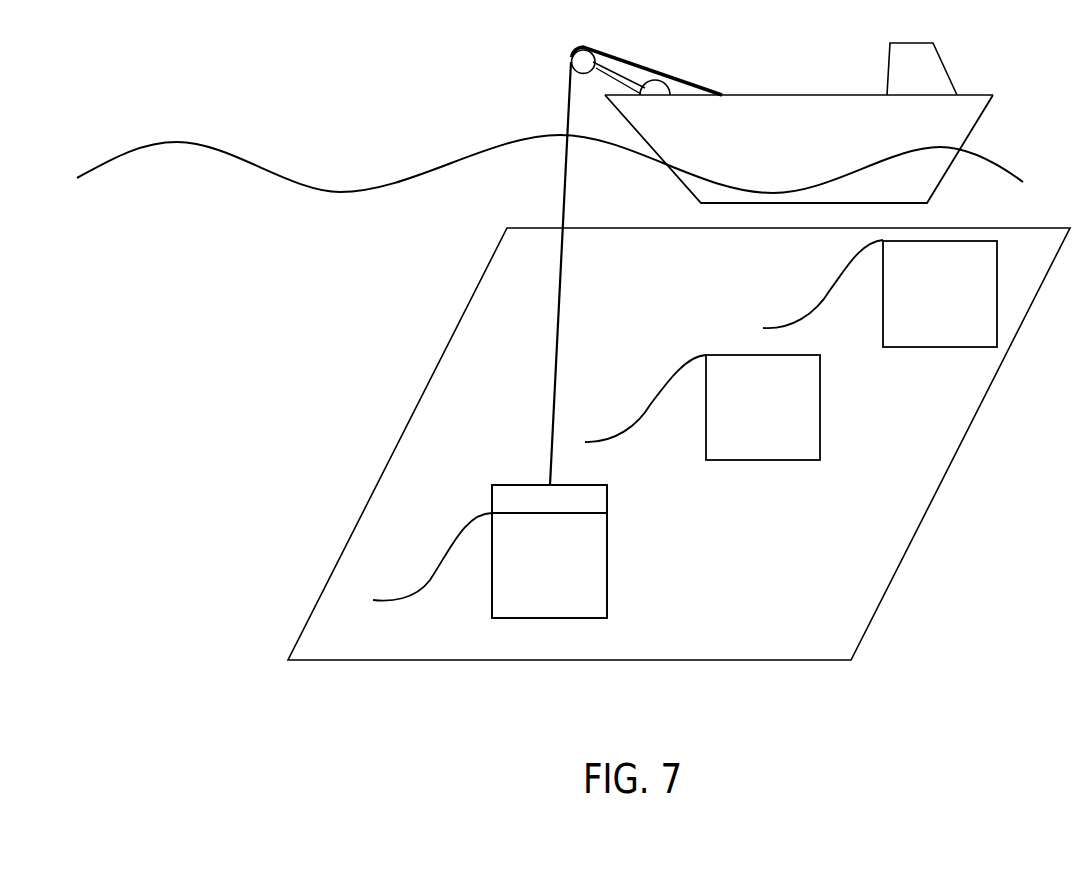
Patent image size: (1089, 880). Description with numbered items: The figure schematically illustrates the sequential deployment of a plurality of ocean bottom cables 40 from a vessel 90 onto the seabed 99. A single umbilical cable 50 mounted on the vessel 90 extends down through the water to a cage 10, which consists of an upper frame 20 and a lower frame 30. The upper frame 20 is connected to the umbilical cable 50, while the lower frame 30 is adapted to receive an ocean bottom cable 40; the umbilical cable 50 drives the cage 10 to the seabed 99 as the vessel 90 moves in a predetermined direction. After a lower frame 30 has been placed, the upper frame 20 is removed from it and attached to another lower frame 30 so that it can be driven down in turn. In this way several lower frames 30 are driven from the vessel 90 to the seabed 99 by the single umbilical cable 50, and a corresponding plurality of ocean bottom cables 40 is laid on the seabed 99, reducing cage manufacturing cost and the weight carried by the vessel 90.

The cage 10 is at (653, 555).
The upper frame 20 is at (607, 498).
The lower frame 30 is at (607, 602).
The ocean bottom cable 40 is at (413, 592).
The umbilical cable 50 is at (562, 305).
The vessel 90 is at (980, 118).
The seabed 99 is at (358, 517).